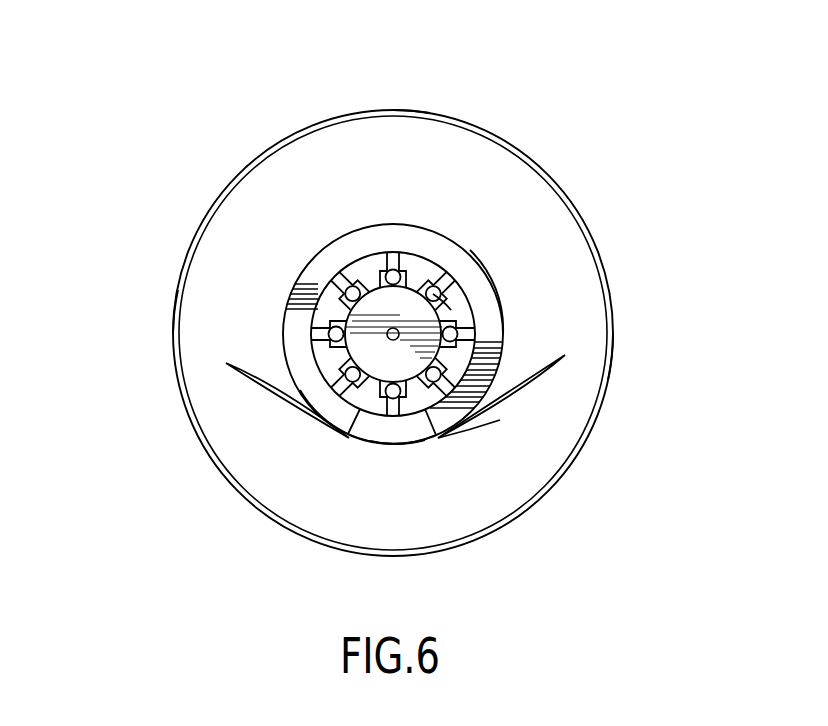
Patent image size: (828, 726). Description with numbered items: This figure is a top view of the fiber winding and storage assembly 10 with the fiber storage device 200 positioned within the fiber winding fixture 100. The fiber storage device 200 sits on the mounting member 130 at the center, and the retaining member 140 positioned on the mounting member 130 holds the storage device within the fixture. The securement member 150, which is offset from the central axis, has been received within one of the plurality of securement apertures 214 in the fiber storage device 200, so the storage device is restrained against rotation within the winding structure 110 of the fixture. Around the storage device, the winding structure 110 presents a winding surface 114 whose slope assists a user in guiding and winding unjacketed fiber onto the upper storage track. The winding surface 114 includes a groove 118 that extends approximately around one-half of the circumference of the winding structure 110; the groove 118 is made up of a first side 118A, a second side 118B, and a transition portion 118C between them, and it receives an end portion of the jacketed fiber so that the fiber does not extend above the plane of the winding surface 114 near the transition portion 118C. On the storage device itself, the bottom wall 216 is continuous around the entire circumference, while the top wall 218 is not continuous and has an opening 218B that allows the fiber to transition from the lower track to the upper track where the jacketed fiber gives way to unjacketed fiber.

The fiber winding and storage assembly 10 is at (390, 87).
The fiber winding fixture 100 is at (632, 321).
The winding structure 110 is at (613, 365).
The winding surface 114 is at (210, 295).
The groove 118 is at (506, 443).
The first side 118A is at (267, 407).
The second side 118B is at (535, 396).
The transition portion 118C is at (398, 460).
The mounting member 130 is at (390, 330).
The retaining member 140 is at (425, 278).
The securement member 150 is at (503, 350).
The fiber storage device 200 is at (416, 208).
The securement apertures 214 is at (462, 300).
The bottom wall 216 is at (408, 432).
The top wall 218 is at (498, 324).
The opening 218B is at (352, 440).